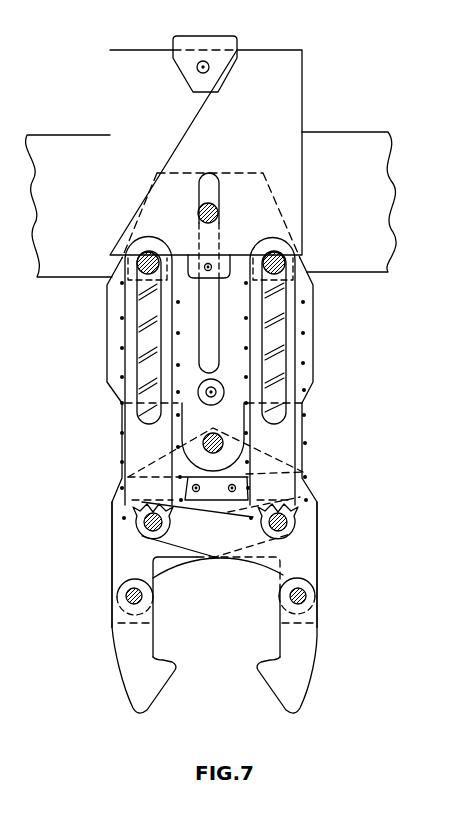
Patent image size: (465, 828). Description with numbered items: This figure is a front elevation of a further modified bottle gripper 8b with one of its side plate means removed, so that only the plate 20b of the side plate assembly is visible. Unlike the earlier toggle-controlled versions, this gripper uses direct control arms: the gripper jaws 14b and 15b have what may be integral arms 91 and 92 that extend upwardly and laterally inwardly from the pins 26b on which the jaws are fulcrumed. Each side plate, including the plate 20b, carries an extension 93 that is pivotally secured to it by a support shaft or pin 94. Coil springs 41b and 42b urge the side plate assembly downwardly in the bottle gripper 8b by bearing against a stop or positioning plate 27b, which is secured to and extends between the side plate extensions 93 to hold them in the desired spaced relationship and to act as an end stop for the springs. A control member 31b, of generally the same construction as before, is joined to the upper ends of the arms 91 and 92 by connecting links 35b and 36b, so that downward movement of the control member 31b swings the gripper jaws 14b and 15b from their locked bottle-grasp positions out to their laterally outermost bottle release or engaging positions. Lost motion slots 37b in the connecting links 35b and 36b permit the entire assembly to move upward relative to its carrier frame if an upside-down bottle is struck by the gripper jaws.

The control member 31b is at (279, 40).
The bottle gripper 8b is at (316, 110).
The lost motion slots 37b is at (279, 315).
The plate 20b is at (308, 377).
The connecting link 36b is at (132, 423).
The connecting link 35b is at (294, 430).
The coil spring 42b is at (124, 462).
The coil spring 41b is at (308, 444).
The support shaft or pin 94 is at (213, 452).
The extension 93 is at (311, 532).
The stop or positioning plate 27b is at (206, 498).
The arm 91 is at (167, 571).
The arm 92 is at (267, 571).
The pins 26b is at (127, 601).
The gripper jaw 14b is at (128, 666).
The gripper jaw 15b is at (308, 669).